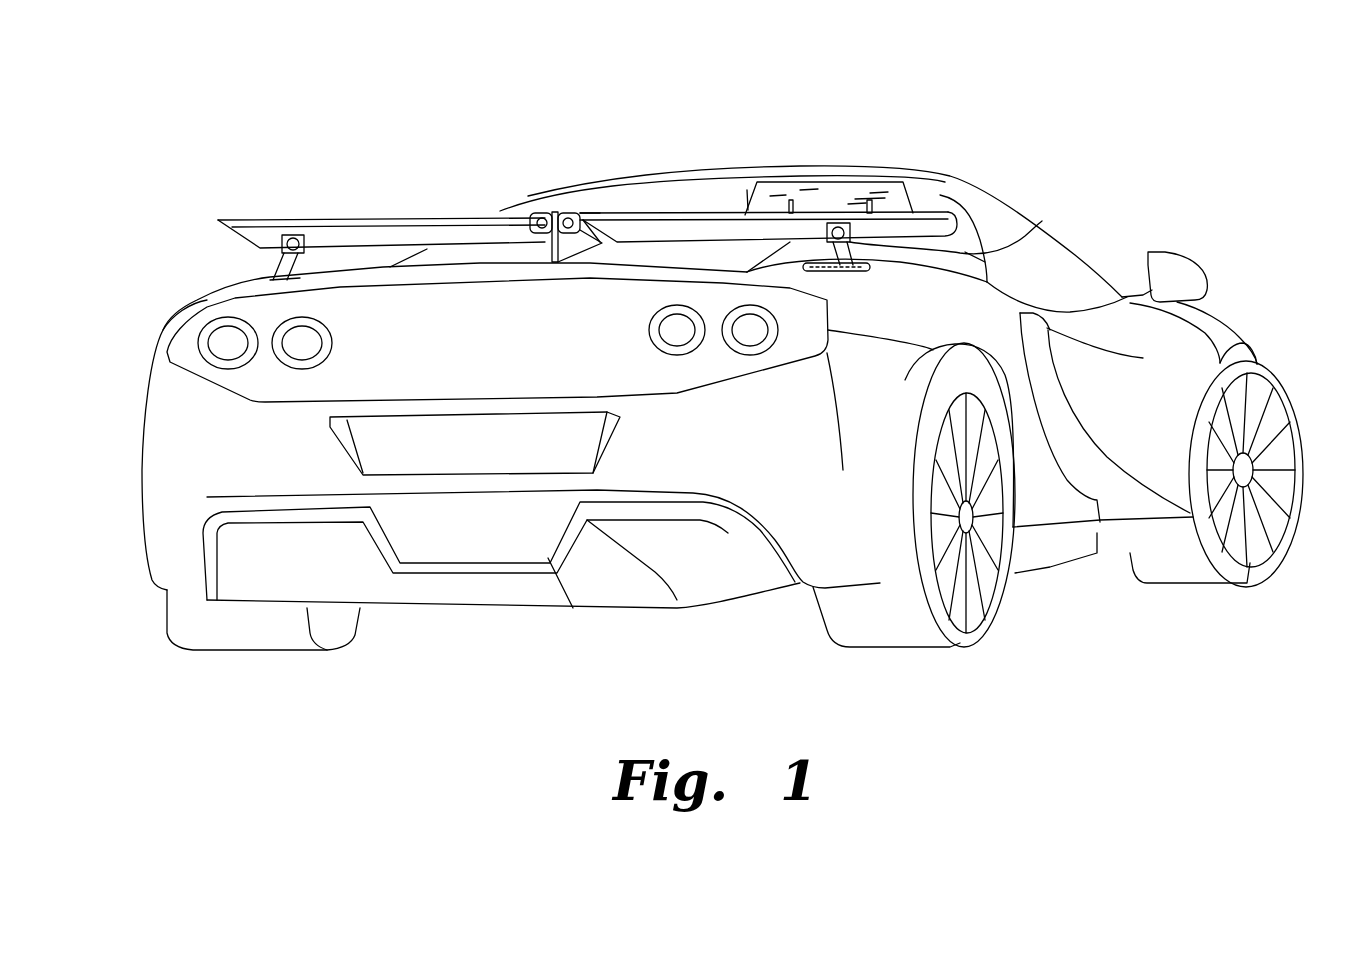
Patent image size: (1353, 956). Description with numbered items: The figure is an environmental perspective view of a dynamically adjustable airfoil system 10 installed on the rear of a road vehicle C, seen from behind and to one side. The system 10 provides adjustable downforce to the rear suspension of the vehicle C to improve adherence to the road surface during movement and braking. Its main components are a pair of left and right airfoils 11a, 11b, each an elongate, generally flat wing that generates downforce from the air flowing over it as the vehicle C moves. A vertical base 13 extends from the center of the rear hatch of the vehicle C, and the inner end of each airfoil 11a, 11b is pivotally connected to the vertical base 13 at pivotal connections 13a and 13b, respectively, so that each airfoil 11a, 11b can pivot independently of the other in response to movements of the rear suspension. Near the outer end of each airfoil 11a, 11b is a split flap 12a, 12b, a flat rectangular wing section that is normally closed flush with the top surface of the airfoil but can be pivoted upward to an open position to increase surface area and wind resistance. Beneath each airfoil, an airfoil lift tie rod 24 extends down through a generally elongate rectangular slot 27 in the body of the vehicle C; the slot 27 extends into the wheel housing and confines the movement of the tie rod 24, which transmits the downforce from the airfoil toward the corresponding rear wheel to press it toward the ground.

The dynamically adjustable airfoil system 10 is at (405, 200).
The left airfoil 11a is at (463, 217).
The right airfoil 11b is at (710, 215).
The split flap 12a is at (287, 217).
The split flap 12b is at (847, 180).
The vertical base 13 is at (567, 248).
The pivotal connection 13a is at (547, 213).
The pivotal connection 13b is at (570, 213).
The airfoil lift tie rod 24 is at (283, 270).
The slot 27 is at (864, 272).
The road vehicle C is at (1133, 207).